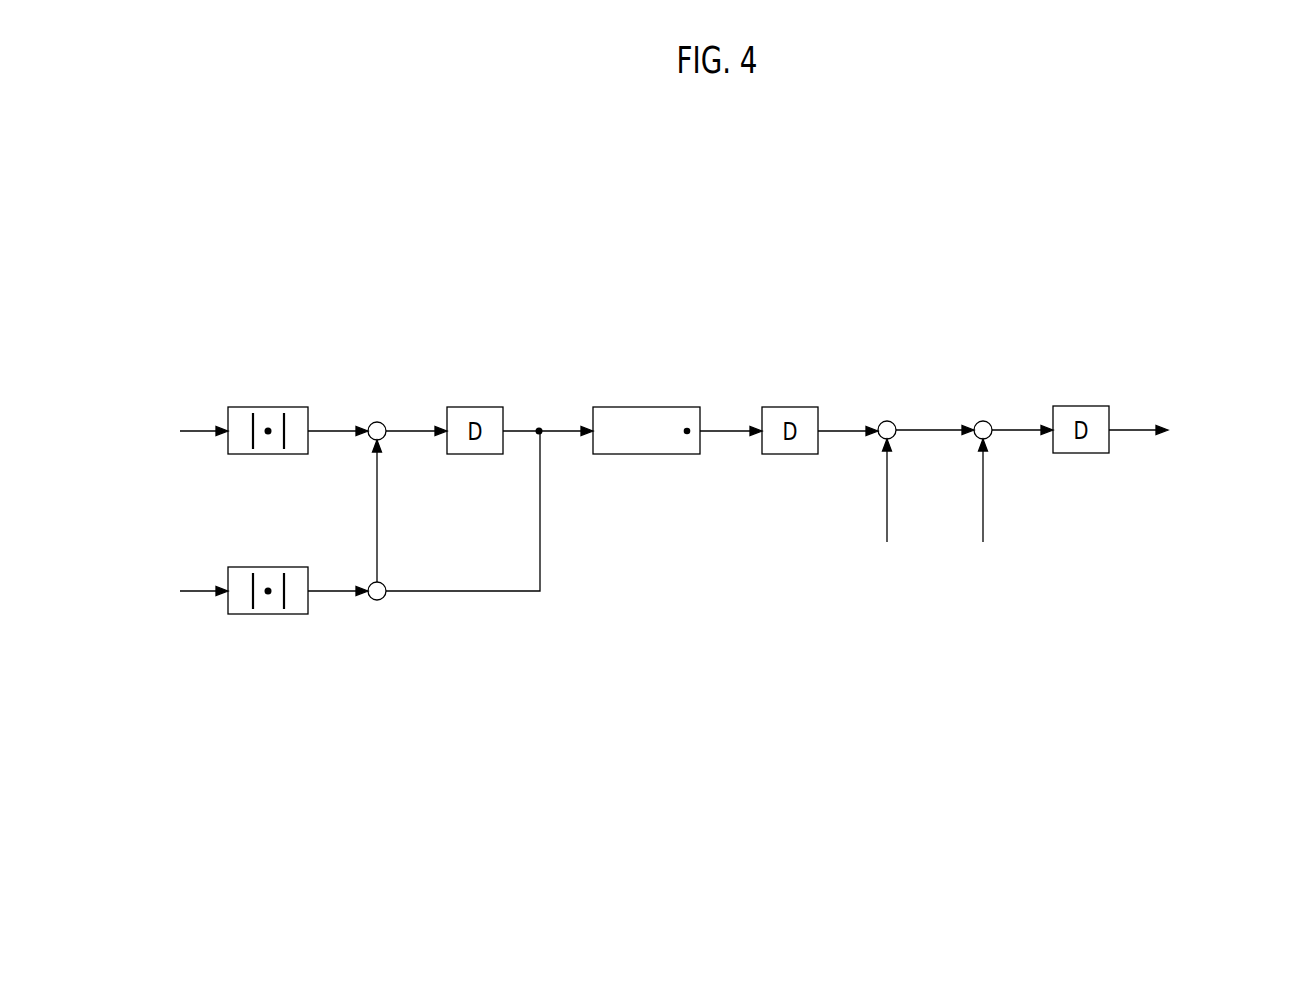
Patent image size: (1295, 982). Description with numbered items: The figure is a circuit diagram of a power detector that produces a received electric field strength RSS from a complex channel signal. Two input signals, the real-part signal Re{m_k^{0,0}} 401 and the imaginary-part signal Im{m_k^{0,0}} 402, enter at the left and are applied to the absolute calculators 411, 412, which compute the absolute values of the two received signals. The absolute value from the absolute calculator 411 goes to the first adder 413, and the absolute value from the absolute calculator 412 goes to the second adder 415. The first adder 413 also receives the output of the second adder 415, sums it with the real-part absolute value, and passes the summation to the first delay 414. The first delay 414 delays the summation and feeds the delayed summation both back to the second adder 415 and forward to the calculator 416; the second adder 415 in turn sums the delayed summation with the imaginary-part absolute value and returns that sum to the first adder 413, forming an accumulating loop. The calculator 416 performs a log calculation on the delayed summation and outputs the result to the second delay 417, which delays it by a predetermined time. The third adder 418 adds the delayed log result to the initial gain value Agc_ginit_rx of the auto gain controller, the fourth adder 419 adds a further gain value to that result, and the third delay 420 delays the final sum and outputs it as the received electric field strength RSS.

The signal Re{m_k^{0,0}} 401 is at (143, 453).
The signal Im{m_k^{0,0}} 402 is at (143, 613).
The absolute calculator 411 is at (279, 407).
The absolute calculator 412 is at (279, 567).
The first adder 413 is at (377, 422).
The first delay 414 is at (475, 407).
The second adder 415 is at (377, 600).
The calculator 416 is at (668, 407).
The second delay 417 is at (790, 407).
The third adder 418 is at (887, 421).
The fourth adder 419 is at (983, 421).
The third delay 420 is at (1080, 406).